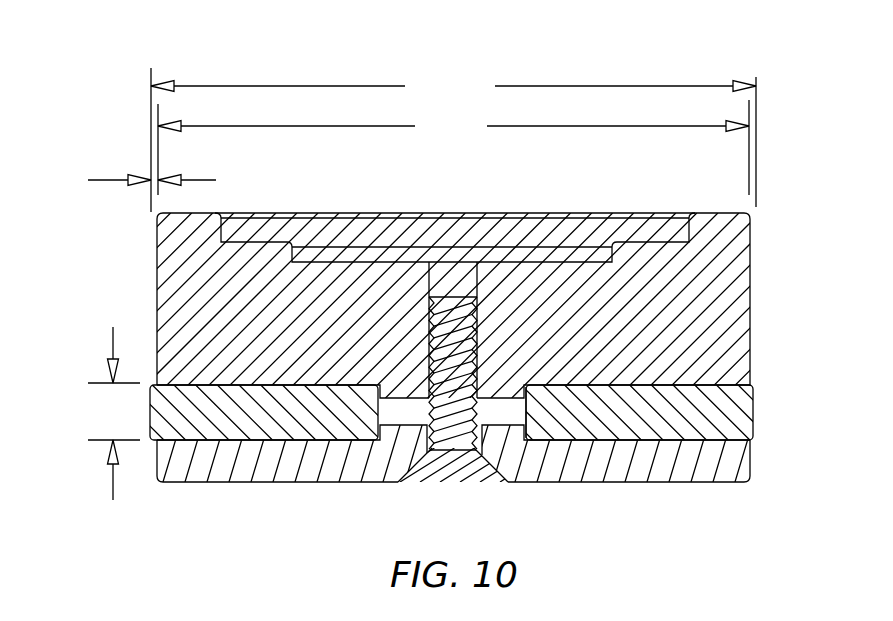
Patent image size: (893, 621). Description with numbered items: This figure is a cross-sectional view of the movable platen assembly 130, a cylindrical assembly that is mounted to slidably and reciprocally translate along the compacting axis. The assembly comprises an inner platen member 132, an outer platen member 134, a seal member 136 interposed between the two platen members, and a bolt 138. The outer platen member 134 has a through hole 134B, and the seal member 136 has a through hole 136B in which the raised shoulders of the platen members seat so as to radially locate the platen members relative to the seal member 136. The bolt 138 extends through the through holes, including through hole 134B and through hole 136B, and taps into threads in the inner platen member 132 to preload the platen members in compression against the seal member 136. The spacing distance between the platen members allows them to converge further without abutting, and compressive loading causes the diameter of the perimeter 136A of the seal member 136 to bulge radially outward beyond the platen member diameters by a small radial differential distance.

The movable platen assembly 130 is at (157, 30).
The inner platen member 132 is at (290, 455).
The outer platen member 134 is at (224, 280).
The through hole 134B is at (477, 294).
The seal member 136 is at (200, 405).
The perimeter 136A is at (753, 403).
The through hole 136B is at (505, 416).
The bolt 138 is at (442, 460).